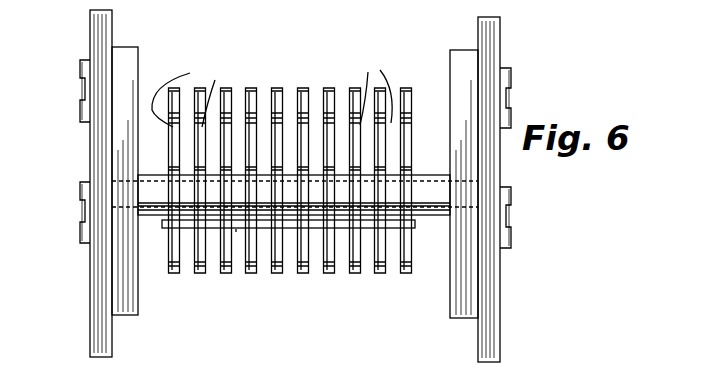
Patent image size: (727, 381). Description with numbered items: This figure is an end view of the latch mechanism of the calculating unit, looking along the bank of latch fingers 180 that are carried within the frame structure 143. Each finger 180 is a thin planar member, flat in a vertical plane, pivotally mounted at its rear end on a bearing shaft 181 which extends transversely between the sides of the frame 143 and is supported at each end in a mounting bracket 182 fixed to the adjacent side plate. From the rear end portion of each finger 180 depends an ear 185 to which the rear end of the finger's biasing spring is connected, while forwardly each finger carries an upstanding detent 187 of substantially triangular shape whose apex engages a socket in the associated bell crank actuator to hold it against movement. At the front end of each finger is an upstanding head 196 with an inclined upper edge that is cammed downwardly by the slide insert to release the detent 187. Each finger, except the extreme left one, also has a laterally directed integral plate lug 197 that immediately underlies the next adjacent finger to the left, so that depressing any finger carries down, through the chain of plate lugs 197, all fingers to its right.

The frame structure 143 is at (90, 146).
The latch finger 180 is at (418, 132).
The bearing shaft 181 is at (148, 212).
The mounting bracket 182 is at (130, 64).
The ear 185 is at (327, 277).
The detent 187 is at (302, 86).
The upstanding head 196 is at (558, 380).
The plate lug 197 is at (240, 230).